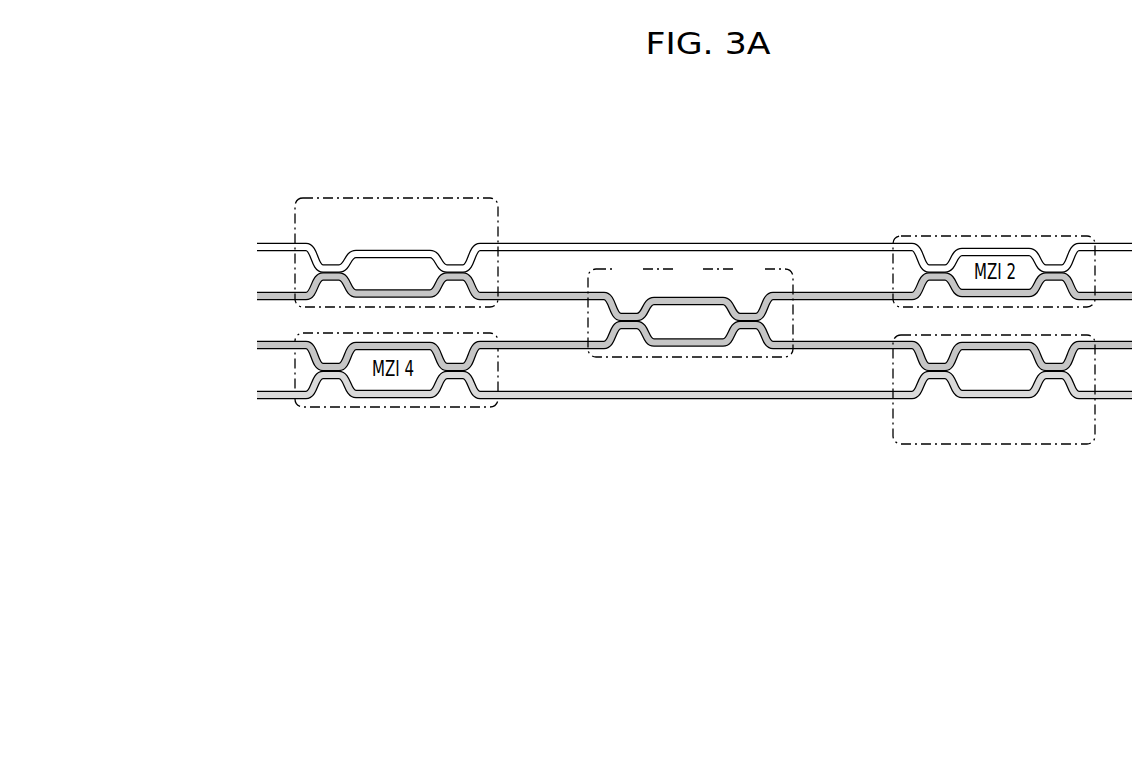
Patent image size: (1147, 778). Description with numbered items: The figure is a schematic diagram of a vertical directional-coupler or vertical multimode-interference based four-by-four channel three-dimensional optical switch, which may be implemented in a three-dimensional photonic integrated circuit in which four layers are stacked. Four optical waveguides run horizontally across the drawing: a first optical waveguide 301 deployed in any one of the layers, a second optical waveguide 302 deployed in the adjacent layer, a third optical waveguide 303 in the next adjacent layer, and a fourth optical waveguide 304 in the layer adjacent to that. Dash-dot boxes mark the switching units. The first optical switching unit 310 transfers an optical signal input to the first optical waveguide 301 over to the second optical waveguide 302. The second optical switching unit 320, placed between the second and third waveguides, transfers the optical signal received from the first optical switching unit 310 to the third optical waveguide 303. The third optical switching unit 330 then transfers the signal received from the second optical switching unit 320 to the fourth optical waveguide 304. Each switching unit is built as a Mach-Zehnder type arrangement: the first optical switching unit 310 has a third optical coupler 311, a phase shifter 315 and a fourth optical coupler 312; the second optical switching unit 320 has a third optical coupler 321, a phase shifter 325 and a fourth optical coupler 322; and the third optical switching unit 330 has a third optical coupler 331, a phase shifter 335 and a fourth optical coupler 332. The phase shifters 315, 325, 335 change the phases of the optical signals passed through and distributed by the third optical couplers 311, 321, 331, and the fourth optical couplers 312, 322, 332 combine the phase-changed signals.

The first optical waveguide 301 is at (257, 247).
The second optical waveguide 302 is at (257, 296).
The third optical waveguide 303 is at (257, 345).
The fourth optical waveguide 304 is at (257, 395).
The first optical switching unit 310 is at (357, 196).
The third optical coupler 311 is at (348, 240).
The fourth optical coupler 312 is at (473, 240).
The phase shifter 315 is at (438, 240).
The second optical switching unit 320 is at (779, 266).
The third optical coupler 321 is at (610, 290).
The fourth optical coupler 322 is at (767, 290).
The phase shifter 325 is at (735, 290).
The third optical switching unit 330 is at (1031, 446).
The third optical coupler 331 is at (1040, 401).
The fourth optical coupler 332 is at (915, 401).
The phase shifter 335 is at (953, 401).